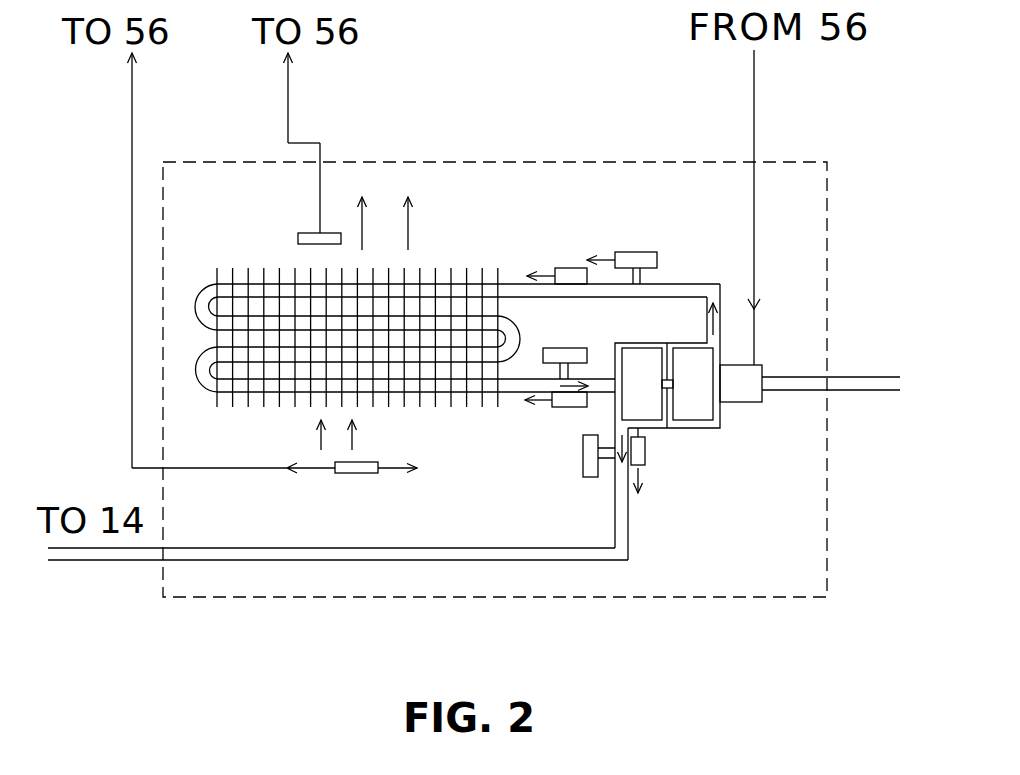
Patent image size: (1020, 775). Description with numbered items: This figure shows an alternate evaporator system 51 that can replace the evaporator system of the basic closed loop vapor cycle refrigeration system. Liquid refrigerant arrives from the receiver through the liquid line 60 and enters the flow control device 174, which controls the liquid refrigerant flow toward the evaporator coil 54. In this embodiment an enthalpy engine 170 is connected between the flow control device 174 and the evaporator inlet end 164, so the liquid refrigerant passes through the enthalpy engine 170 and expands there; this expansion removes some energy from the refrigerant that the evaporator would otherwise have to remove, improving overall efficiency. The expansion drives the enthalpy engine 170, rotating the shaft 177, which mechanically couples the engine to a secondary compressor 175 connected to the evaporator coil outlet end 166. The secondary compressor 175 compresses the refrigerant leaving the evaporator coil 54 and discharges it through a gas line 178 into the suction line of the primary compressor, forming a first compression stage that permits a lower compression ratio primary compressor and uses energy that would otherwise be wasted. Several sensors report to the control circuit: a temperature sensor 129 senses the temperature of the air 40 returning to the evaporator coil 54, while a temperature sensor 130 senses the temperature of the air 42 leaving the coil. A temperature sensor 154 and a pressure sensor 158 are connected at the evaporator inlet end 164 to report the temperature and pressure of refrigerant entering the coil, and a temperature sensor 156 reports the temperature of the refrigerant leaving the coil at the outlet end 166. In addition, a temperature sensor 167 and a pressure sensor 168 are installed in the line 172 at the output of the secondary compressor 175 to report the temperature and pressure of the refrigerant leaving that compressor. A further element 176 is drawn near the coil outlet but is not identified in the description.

The alternate evaporator system 51 is at (412, 158).
The evaporator coil 54 is at (275, 265).
The temperature sensor 130 is at (298, 236).
The air 42 is at (436, 243).
The air 40 is at (355, 445).
The temperature sensor 129 is at (343, 475).
The temperature sensor 154 is at (573, 267).
The pressure sensor 158 is at (675, 235).
The valve 176 is at (590, 335).
The temperature sensor 156 is at (558, 412).
The evaporator inlet end 164 is at (720, 293).
The evaporator coil outlet end 166 is at (600, 379).
The secondary compressor 175 is at (652, 430).
The enthalpy engine 170 is at (703, 428).
The shaft 177 is at (662, 393).
The flow control device 174 is at (762, 370).
The liquid line 60 is at (895, 390).
The line 172 is at (627, 510).
The pressure sensor 168 is at (583, 465).
The temperature sensor 167 is at (647, 472).
The gas line 178 is at (278, 560).